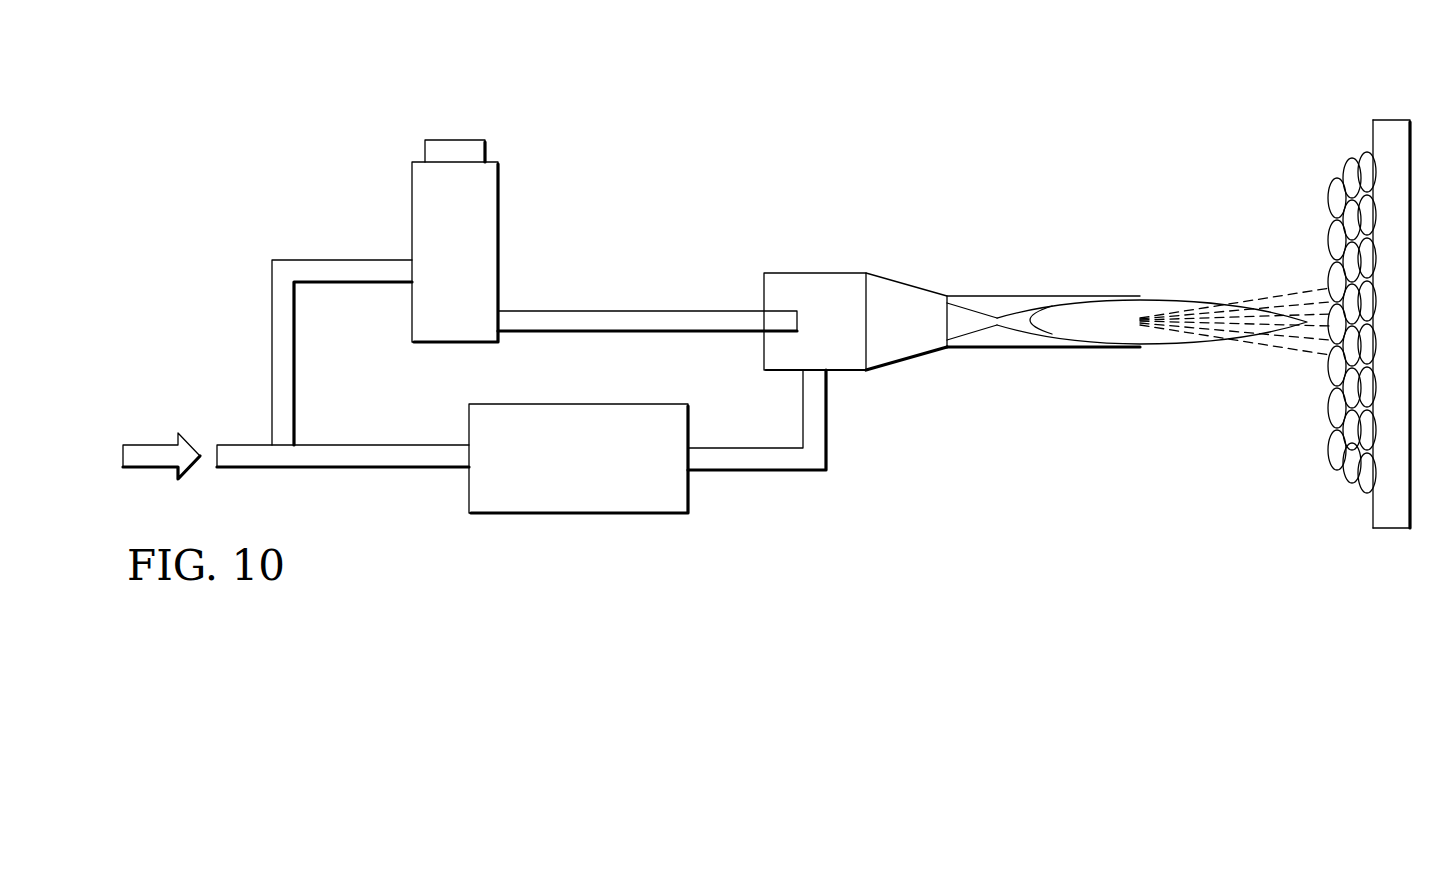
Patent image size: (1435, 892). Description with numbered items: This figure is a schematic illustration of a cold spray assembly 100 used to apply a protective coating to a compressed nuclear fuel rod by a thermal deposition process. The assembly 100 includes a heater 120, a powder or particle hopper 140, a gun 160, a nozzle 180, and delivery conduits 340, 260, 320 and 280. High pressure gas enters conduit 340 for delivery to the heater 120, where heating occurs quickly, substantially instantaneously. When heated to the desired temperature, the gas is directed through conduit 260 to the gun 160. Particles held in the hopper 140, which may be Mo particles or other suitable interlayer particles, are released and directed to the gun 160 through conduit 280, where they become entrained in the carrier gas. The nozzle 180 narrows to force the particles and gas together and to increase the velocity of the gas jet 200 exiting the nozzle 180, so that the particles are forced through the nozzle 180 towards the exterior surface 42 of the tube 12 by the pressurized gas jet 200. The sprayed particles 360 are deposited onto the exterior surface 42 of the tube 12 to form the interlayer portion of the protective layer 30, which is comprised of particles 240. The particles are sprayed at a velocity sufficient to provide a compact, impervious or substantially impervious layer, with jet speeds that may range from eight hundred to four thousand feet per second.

The cold spray assembly 100 is at (1120, 95).
The tube 12 is at (1351, 356).
The exterior surface 42 is at (1373, 133).
The protective layer 30 is at (1333, 462).
The particles 240 is at (1330, 202).
The heater 120 is at (596, 461).
The hopper 140 is at (472, 249).
The gun 160 is at (893, 357).
The nozzle 180 is at (998, 341).
The gas jet 200 is at (1102, 311).
The conduit 260 is at (765, 461).
The conduit 280 is at (630, 312).
The conduit 320 is at (273, 343).
The conduit 340 is at (327, 459).
The sprayed particles 360 is at (1287, 355).